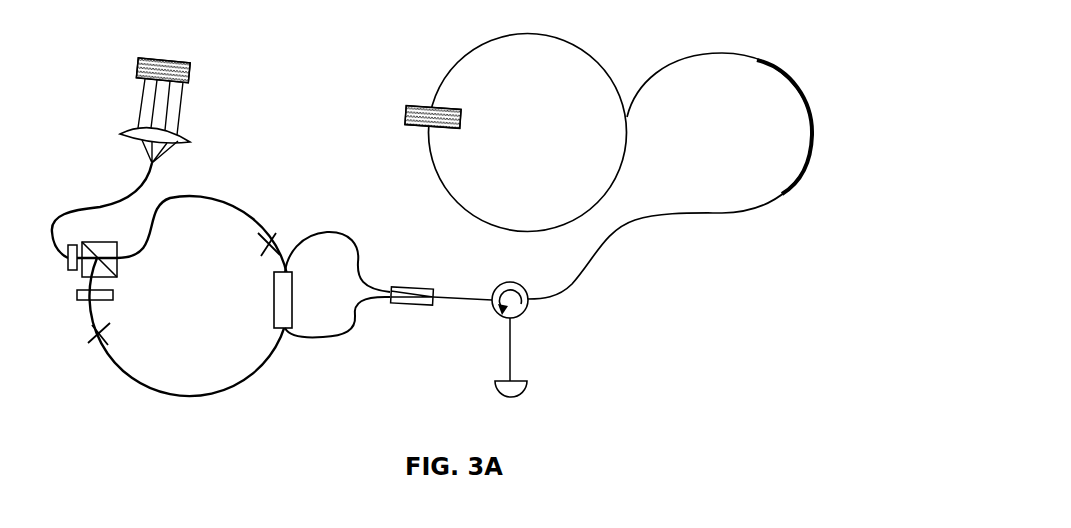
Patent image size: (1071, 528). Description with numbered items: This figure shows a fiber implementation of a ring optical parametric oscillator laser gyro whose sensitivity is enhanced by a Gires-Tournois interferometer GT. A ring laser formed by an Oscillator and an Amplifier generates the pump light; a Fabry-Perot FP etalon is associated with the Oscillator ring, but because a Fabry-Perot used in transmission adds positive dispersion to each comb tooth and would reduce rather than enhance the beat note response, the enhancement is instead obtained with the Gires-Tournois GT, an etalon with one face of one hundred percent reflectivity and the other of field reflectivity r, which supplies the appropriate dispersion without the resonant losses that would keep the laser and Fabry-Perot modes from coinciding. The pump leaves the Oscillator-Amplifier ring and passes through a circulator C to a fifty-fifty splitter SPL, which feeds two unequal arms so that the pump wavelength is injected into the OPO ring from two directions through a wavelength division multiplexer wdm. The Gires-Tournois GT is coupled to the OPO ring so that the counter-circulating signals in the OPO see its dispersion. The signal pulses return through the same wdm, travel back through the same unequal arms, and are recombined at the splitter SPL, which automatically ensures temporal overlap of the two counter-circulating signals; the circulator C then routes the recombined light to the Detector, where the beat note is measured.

The Gires-Tournois interferometer GT is at (121, 143).
The Fabry-Perot FP is at (414, 115).
The ring laser oscillator Oscillator is at (528, 133).
The amplifier Amplifier is at (670, 176).
The OPO ring OPO is at (183, 296).
The wavelength division multiplexer wdm is at (271, 300).
The 50/50 splitter SPL is at (441, 283).
The circulator C is at (517, 309).
The detector Detector is at (559, 362).